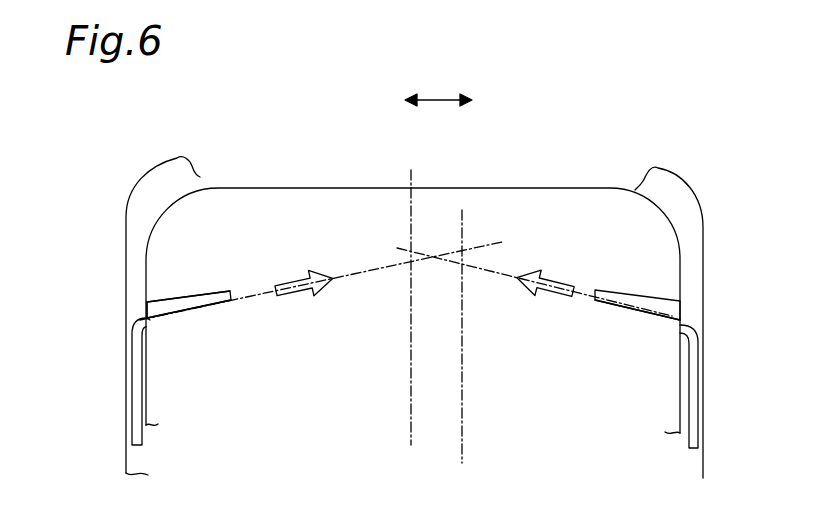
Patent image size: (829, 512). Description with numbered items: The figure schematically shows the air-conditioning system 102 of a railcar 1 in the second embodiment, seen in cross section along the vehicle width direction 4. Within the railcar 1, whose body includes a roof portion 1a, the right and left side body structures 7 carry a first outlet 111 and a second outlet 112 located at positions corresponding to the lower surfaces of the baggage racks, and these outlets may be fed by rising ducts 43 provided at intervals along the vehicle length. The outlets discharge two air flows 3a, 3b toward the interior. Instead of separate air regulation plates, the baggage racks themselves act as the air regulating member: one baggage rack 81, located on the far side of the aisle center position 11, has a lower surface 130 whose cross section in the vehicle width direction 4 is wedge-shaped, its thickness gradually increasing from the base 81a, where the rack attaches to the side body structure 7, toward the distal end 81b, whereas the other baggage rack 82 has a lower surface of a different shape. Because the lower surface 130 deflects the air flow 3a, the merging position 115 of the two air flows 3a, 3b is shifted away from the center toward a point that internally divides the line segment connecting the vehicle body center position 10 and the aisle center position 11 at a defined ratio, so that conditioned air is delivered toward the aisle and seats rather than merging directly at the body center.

The railcar 1 is at (690, 179).
The top wall of housing 1a is at (340, 178).
The air flow 3a is at (297, 298).
The air flow 3b is at (545, 298).
The vehicle width direction 4 is at (438, 98).
The side body structure 7 is at (147, 383).
The vehicle body center position 10 is at (410, 398).
The aisle center position 11 is at (462, 393).
The rising duct 43 is at (134, 373).
The baggage rack 81 is at (197, 291).
The base of the baggage rack 81a is at (146, 303).
The distal end of the baggage rack 81b is at (230, 291).
The baggage rack 82 is at (643, 299).
The air-conditioning system 102 is at (616, 100).
The first outlet 111 is at (147, 319).
The second outlet 112 is at (662, 318).
The merging position 115 is at (433, 257).
The lower surface 130 is at (223, 303).